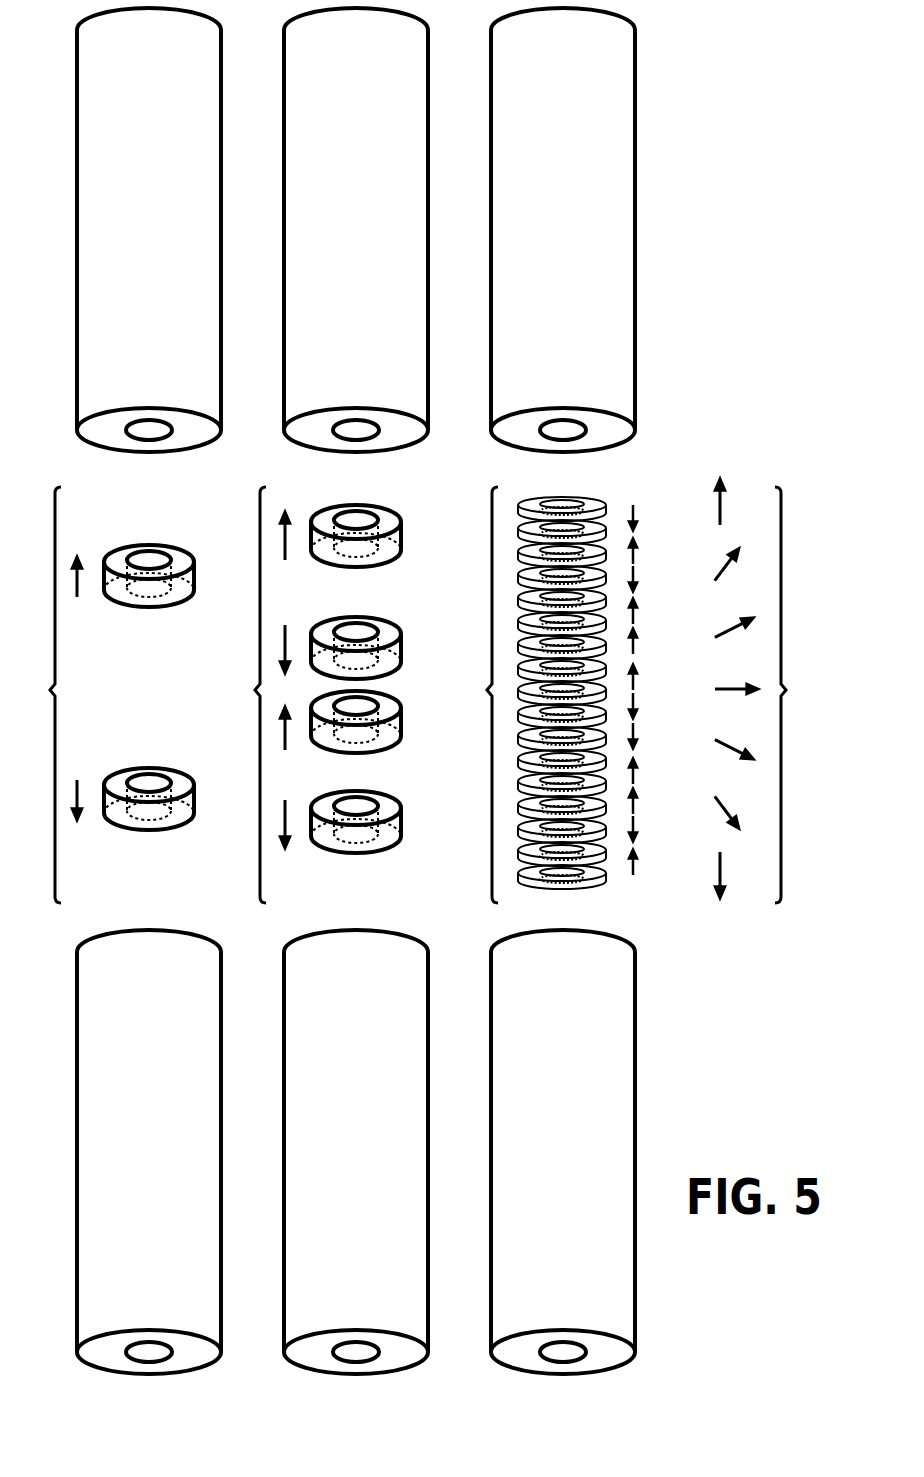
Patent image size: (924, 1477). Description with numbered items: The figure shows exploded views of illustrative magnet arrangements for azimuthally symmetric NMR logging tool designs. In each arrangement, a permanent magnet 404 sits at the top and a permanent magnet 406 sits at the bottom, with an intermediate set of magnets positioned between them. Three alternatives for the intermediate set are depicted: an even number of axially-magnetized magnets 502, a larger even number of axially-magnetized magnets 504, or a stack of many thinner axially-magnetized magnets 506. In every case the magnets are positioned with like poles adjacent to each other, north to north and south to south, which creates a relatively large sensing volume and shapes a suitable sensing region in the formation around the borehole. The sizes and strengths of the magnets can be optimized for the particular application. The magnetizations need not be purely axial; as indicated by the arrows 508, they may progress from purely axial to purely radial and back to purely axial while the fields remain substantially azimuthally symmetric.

The permanent magnet 404 is at (77, 226).
The permanent magnet 406 is at (77, 1096).
The axially-magnetized magnets 502 is at (102, 695).
The axially-magnetized magnets 504 is at (307, 695).
The axially-magnetized magnets 506 is at (542, 695).
The arrows 508 is at (770, 690).